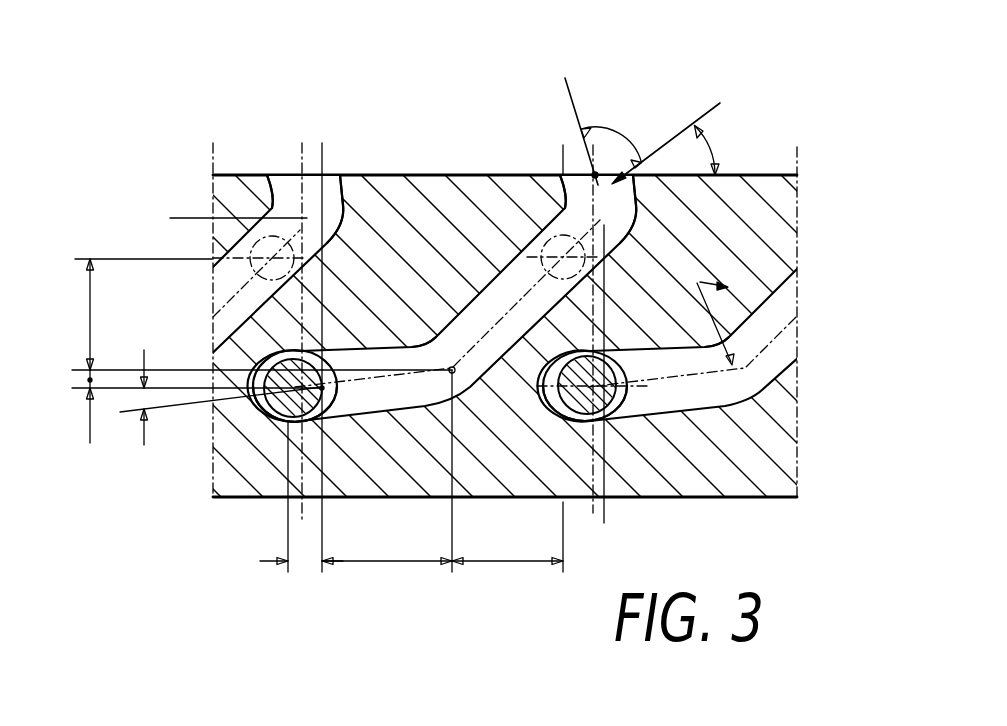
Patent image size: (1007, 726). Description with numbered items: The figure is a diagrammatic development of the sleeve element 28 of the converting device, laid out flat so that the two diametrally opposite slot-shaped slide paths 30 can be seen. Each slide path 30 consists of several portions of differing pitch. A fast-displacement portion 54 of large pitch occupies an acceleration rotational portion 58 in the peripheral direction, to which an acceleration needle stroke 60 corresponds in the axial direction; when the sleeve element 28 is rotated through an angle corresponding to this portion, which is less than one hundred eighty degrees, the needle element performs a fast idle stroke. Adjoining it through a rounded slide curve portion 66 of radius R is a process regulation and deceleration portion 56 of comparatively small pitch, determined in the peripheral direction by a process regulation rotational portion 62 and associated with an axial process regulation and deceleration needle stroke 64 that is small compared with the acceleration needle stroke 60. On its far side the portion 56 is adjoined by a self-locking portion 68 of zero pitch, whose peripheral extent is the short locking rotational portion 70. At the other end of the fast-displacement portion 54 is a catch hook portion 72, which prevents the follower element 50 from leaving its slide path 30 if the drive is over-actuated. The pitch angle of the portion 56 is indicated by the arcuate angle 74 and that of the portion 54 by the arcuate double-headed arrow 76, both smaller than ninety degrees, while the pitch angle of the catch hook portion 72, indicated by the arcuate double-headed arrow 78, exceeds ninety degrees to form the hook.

The sleeve element 28 is at (240, 200).
The slot-shaped slide path 30 is at (225, 287).
The follower element 50 is at (287, 417).
The fast-displacement portion 54 is at (497, 297).
The process regulation and deceleration portion 56 is at (380, 355).
The acceleration rotational portion 58 is at (493, 561).
The acceleration needle stroke 60 is at (90, 316).
The process regulation rotational portion 62 is at (390, 561).
The process regulation and deceleration needle stroke 64 is at (90, 380).
The rounded slide curve portion 66 is at (442, 347).
The self-locking portion 68 is at (263, 415).
The locking rotational portion 70 is at (303, 561).
The catch hook portion 72 is at (282, 187).
The arcuate angle 74 is at (146, 400).
The arcuate double-headed arrow 76 is at (703, 148).
The arcuate double-headed arrow 78 is at (620, 135).